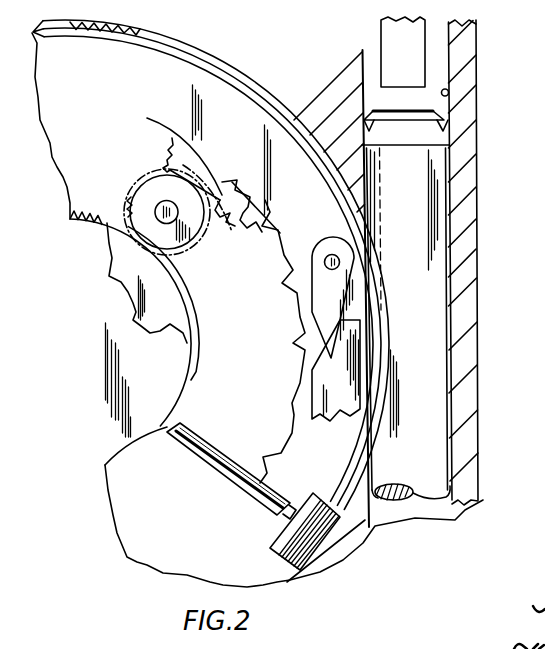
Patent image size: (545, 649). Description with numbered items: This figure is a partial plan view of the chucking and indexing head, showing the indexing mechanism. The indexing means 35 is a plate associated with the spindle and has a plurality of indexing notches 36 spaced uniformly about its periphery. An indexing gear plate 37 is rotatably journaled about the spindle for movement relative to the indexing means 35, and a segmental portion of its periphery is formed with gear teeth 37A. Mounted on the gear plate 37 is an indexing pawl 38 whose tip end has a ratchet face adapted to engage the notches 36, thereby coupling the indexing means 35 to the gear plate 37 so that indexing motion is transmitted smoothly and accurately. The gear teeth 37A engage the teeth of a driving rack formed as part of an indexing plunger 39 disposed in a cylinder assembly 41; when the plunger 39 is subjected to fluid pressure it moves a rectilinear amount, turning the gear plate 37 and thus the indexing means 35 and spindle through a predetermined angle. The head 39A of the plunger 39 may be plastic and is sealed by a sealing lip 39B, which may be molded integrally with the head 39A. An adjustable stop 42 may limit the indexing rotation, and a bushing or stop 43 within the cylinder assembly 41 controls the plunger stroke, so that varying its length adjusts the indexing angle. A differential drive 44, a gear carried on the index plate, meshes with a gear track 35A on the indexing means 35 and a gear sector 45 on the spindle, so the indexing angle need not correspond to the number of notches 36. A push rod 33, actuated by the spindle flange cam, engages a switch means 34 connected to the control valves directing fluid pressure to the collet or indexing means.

The push rod 33 is at (218, 478).
The switch means 34 is at (289, 565).
The indexing means 35 is at (238, 187).
The gear track 35A is at (210, 233).
The indexing notches 36 is at (222, 182).
The indexing gear plate 37 is at (138, 57).
The gear teeth 37A is at (202, 60).
The indexing pawl 38 is at (318, 313).
The indexing plunger 39 is at (430, 270).
The head of the indexing plunger 39A is at (445, 138).
The sealing lip 39B is at (447, 117).
The cylinder assembly 41 is at (448, 92).
The adjustable stop 42 is at (330, 410).
The bushing or stop 43 is at (412, 52).
The differential drive 44 is at (193, 228).
The gear sector 45 is at (72, 220).